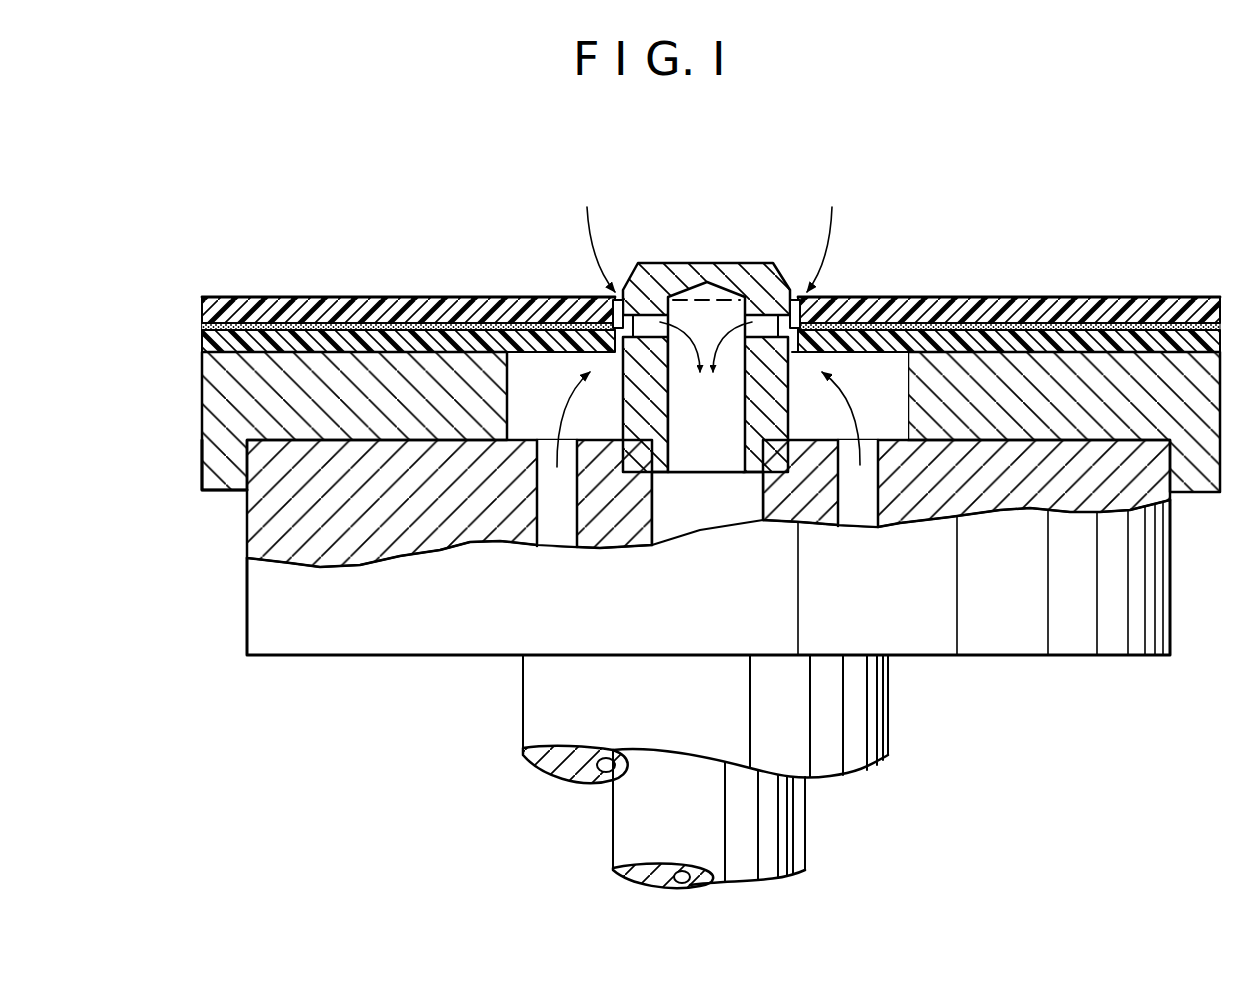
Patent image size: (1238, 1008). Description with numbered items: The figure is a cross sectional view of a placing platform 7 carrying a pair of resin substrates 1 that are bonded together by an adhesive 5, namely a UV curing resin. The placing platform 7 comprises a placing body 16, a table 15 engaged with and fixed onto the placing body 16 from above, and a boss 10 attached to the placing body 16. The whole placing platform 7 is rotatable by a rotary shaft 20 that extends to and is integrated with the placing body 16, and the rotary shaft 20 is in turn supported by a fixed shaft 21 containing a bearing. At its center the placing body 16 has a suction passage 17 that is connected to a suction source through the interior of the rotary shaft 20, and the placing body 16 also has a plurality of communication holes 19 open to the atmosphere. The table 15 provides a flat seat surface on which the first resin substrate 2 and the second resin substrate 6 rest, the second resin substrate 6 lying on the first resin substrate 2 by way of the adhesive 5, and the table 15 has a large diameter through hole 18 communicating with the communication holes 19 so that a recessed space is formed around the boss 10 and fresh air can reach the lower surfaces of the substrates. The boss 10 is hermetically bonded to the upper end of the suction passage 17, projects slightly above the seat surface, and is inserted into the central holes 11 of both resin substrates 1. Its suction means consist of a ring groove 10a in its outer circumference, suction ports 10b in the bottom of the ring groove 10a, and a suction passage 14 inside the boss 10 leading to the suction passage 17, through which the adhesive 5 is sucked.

The resin substrates 1 is at (503, 292).
The first resin substrate 2 is at (223, 343).
The adhesive 5 is at (1023, 322).
The second resin substrate 6 is at (293, 305).
The placing platform 7 is at (190, 427).
The boss 10 is at (677, 268).
The ring groove 10a is at (802, 312).
The suction ports 10b is at (753, 305).
The central holes 11 is at (631, 288).
The suction passage 14 is at (676, 392).
The table 15 is at (210, 473).
The placing body 16 is at (262, 622).
The suction passage 17 is at (655, 500).
The large diameter through hole 18 is at (887, 360).
The communication holes 19 is at (540, 494).
The rotary shaft 20 is at (793, 820).
The fixed shaft 21 is at (535, 695).